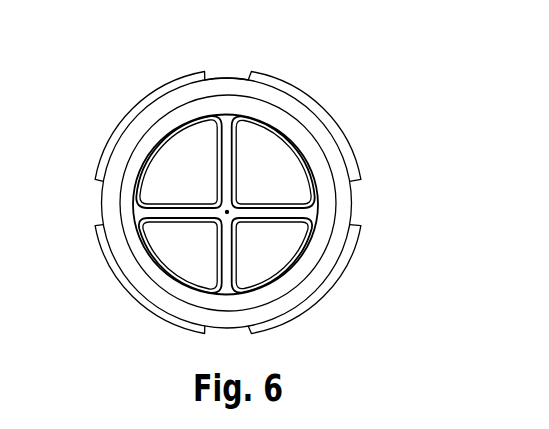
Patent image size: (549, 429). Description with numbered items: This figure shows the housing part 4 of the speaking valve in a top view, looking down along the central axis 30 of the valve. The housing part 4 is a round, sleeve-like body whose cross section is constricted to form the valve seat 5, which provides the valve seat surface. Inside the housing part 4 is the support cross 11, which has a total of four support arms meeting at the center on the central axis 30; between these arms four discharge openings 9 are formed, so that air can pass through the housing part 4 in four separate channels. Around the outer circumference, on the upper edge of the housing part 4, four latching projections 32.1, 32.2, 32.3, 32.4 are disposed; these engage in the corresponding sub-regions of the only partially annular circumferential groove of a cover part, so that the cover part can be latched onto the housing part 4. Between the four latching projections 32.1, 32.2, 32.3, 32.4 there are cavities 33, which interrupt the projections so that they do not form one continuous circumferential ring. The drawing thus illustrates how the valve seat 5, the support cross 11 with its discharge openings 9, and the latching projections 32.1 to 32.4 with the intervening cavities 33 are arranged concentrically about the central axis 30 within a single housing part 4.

The housing part 4 is at (434, 106).
The valve seat 5 is at (124, 220).
The discharge openings 9 is at (267, 193).
The support cross 11 is at (285, 213).
The central axis 30 is at (220, 213).
The latching projection 32.1 is at (132, 111).
The latching projection 32.2 is at (302, 95).
The latching projection 32.3 is at (354, 243).
The latching projection 32.4 is at (110, 266).
The cavities 33 is at (229, 76).